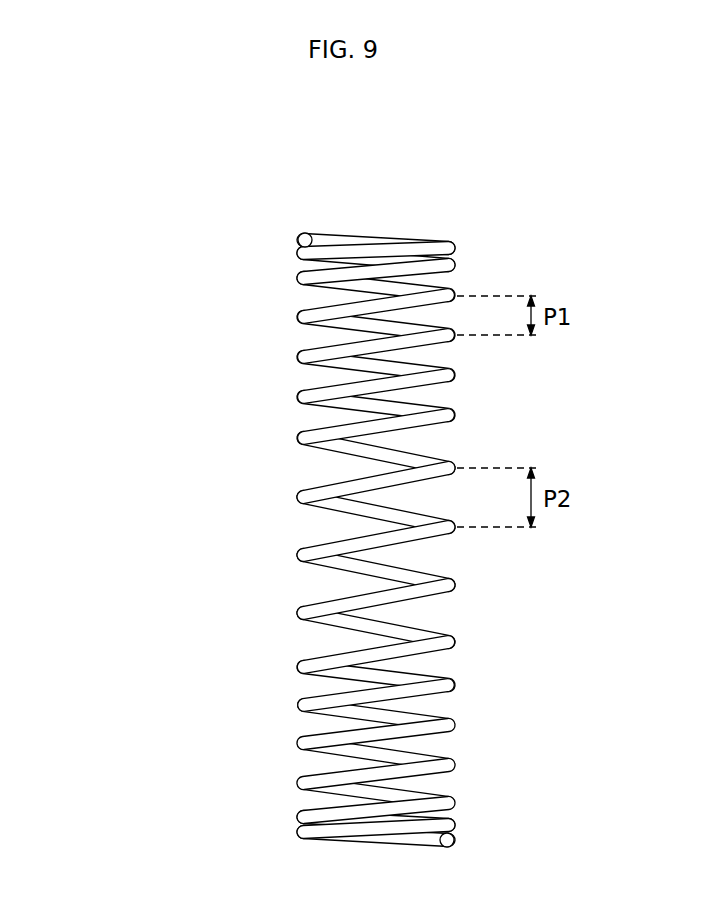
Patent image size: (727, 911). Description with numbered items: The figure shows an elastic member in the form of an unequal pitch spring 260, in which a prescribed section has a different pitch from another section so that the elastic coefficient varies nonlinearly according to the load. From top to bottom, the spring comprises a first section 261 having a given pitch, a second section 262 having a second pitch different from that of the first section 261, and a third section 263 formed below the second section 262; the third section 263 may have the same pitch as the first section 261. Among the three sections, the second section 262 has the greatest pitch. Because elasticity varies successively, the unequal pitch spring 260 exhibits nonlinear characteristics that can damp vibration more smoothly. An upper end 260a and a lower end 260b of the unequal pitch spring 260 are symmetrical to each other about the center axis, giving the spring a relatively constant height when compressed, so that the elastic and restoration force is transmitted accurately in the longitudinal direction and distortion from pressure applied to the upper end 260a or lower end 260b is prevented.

The unequal pitch spring 260 is at (96, 195).
The upper end 260a is at (308, 237).
The lower end 260b is at (452, 845).
The first section 261 is at (283, 232).
The second section 262 is at (283, 390).
The third section 263 is at (283, 692).